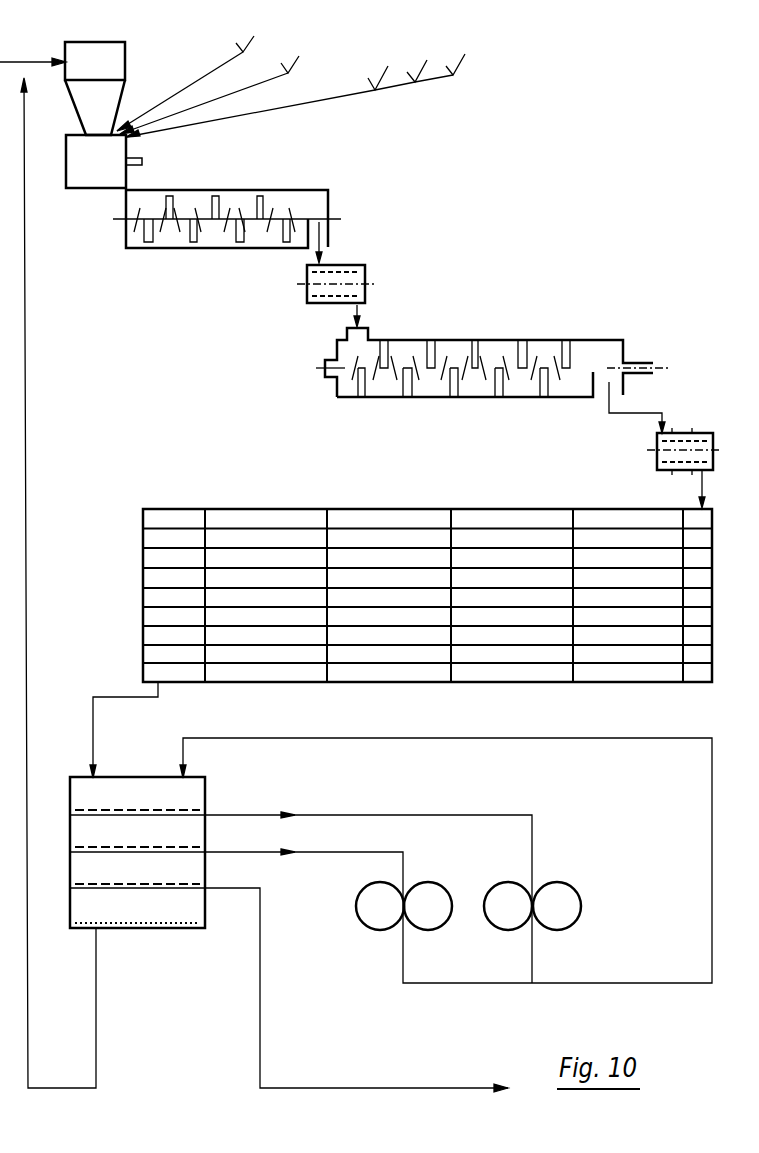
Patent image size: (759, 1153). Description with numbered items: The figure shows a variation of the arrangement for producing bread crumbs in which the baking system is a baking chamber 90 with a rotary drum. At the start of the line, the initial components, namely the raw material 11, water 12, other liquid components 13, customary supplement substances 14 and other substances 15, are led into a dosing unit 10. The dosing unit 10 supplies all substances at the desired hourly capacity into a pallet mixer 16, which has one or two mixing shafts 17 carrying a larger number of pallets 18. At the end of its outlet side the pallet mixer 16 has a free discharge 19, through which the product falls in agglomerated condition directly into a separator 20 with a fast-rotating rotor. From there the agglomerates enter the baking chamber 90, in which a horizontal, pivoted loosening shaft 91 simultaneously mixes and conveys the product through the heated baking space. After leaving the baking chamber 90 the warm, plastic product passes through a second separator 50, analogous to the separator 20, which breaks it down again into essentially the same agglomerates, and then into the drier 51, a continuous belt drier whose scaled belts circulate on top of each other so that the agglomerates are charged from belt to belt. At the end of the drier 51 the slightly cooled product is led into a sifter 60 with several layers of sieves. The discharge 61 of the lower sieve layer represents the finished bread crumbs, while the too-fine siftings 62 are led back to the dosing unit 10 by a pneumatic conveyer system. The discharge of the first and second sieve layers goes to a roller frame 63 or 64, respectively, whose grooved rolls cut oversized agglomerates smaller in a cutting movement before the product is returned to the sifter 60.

The dosing unit 10 is at (103, 175).
The raw material 11 is at (185, 70).
The water 12 is at (212, 81).
The other liquid components 13 is at (257, 92).
The customary supplement substances 14 is at (401, 63).
The other substances 15 is at (440, 55).
The pallet mixer 16 is at (232, 192).
The mixing shaft 17 is at (120, 219).
The pallets 18 is at (194, 242).
The free discharge 19 is at (307, 236).
The separator 20 is at (366, 273).
The separator 50 is at (657, 461).
The drier 51 is at (303, 508).
The sifter 60 is at (205, 787).
The discharge 61 is at (260, 998).
The siftings 62 is at (96, 1042).
The roller frame 63 is at (378, 901).
The roller frame 64 is at (560, 903).
The baking chamber 90 is at (325, 378).
The loosening shaft 91 is at (447, 398).